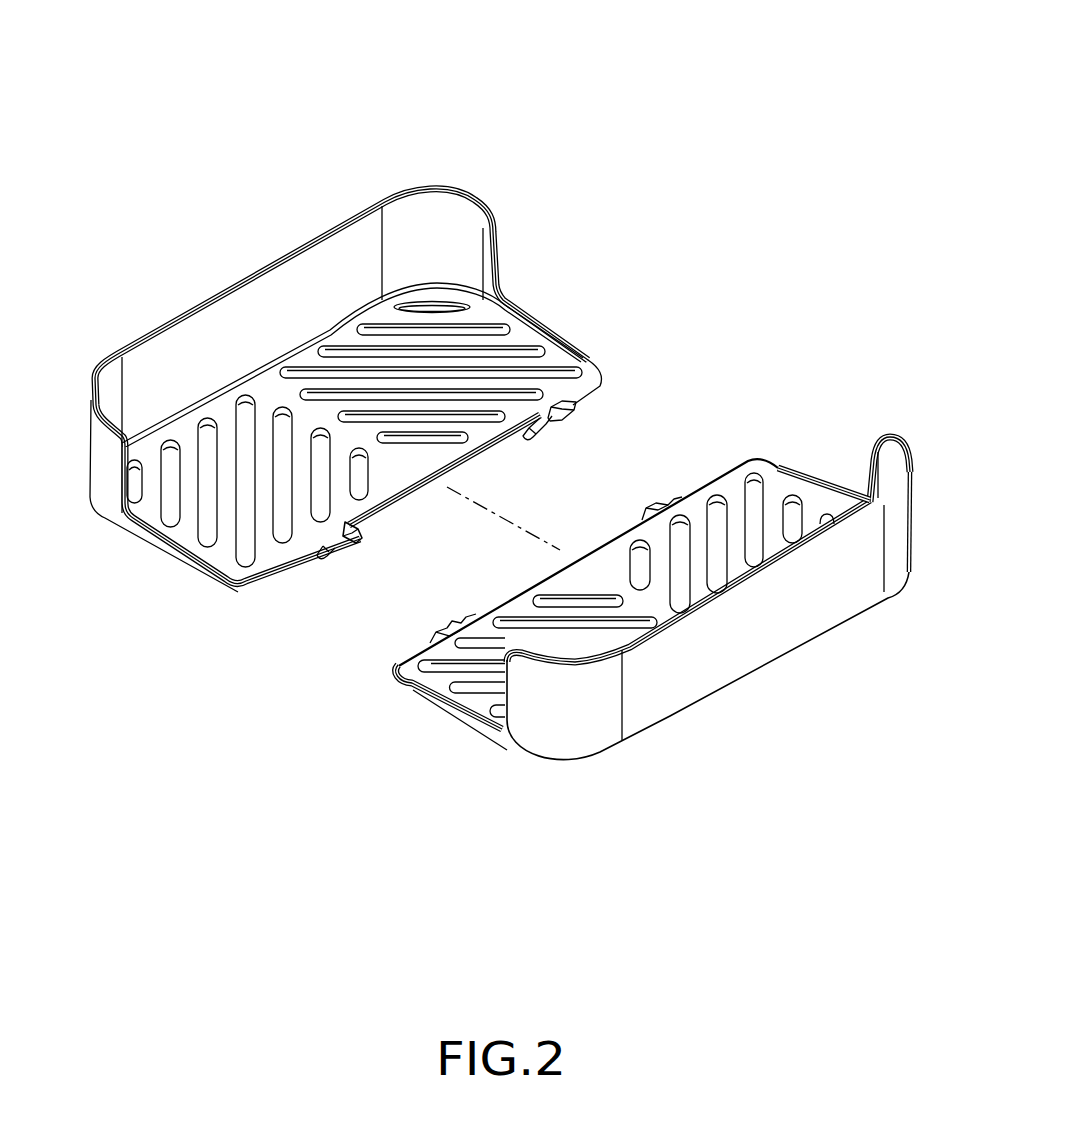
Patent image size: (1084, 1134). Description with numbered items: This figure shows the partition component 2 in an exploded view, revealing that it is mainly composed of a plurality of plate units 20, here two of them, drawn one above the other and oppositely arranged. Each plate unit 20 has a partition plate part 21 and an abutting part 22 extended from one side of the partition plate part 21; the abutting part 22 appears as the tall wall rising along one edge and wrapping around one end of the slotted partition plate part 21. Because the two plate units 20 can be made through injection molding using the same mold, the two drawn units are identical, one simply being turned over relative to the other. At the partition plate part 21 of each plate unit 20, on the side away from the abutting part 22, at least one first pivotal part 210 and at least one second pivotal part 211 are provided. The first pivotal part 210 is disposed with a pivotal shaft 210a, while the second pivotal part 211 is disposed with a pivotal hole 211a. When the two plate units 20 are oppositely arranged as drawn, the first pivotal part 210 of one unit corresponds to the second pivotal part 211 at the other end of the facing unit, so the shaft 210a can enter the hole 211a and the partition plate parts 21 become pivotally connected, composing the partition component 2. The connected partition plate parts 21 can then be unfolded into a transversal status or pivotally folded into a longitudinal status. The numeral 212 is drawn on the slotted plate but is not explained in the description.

The partition component 2 is at (549, 47).
The plate unit 20 is at (657, 871).
The partition plate part 21 is at (495, 554).
The abutting part 22 is at (272, 290).
The first pivotal part 210 is at (552, 410).
The pivotal shaft 210a is at (532, 423).
The second pivotal part 211 is at (352, 528).
The pivotal hole 211a is at (326, 556).
The slot 212 is at (717, 520).